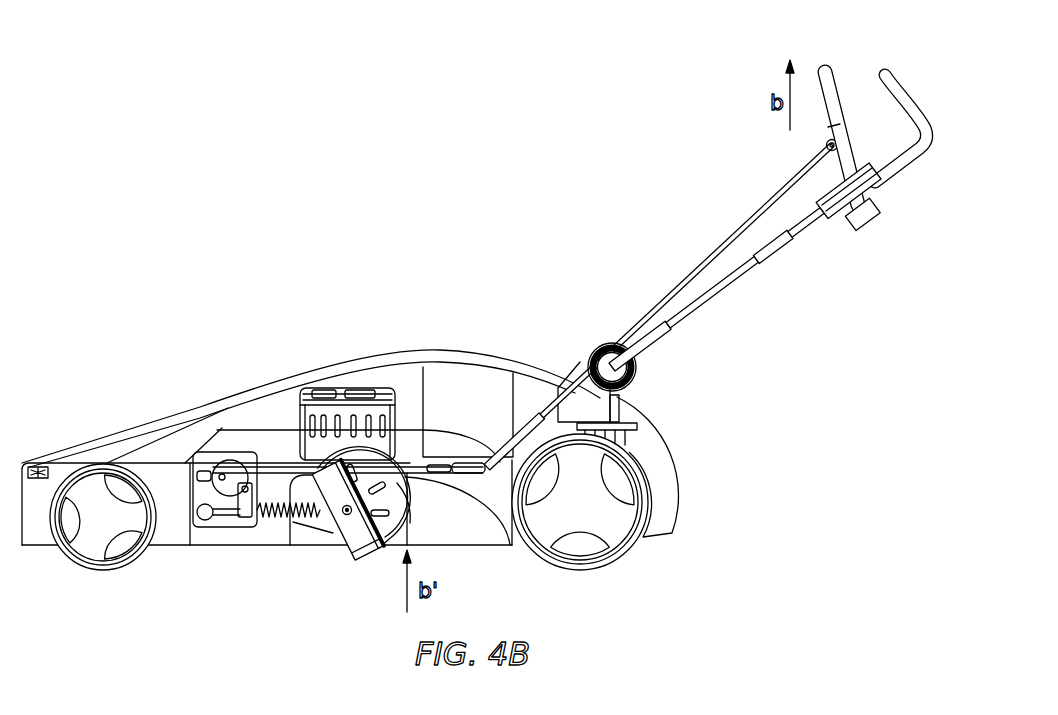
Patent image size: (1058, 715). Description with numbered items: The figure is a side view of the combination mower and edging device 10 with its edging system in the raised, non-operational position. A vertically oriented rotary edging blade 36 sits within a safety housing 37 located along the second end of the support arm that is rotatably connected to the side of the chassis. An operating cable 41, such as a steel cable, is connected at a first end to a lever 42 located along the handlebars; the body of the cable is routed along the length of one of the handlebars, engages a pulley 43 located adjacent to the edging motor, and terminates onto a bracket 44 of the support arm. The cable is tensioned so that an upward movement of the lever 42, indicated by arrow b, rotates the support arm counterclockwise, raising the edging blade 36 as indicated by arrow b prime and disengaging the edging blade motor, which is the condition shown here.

The lawn mower 10 is at (210, 274).
The rotary edging blade 36 is at (357, 553).
The safety housing 37 is at (390, 500).
The operating cable 41 is at (727, 237).
The lever 42 is at (832, 92).
The pulley 43 is at (203, 473).
The bracket 44 is at (248, 503).